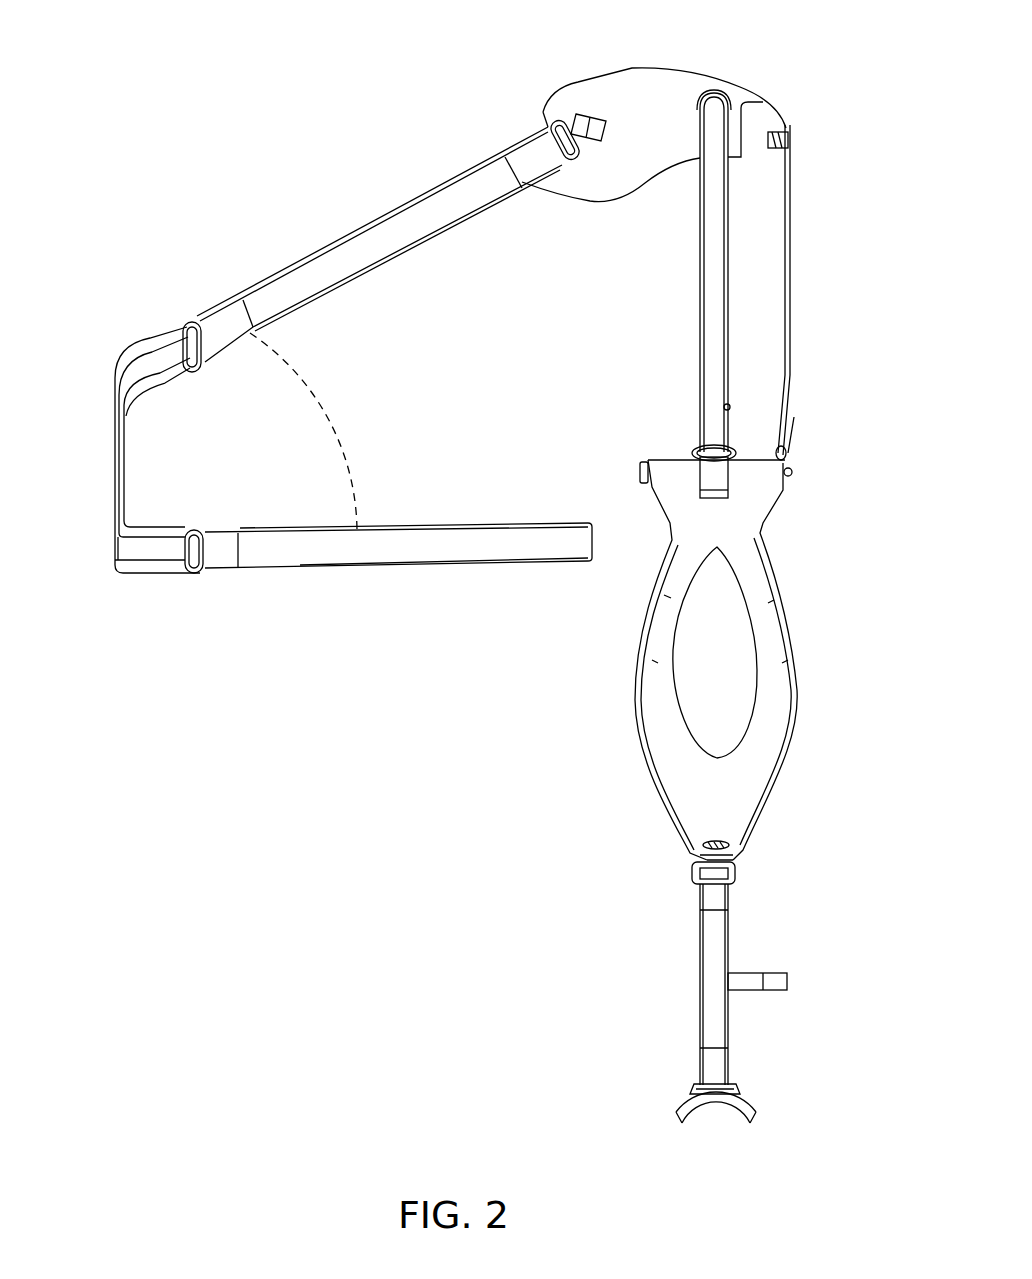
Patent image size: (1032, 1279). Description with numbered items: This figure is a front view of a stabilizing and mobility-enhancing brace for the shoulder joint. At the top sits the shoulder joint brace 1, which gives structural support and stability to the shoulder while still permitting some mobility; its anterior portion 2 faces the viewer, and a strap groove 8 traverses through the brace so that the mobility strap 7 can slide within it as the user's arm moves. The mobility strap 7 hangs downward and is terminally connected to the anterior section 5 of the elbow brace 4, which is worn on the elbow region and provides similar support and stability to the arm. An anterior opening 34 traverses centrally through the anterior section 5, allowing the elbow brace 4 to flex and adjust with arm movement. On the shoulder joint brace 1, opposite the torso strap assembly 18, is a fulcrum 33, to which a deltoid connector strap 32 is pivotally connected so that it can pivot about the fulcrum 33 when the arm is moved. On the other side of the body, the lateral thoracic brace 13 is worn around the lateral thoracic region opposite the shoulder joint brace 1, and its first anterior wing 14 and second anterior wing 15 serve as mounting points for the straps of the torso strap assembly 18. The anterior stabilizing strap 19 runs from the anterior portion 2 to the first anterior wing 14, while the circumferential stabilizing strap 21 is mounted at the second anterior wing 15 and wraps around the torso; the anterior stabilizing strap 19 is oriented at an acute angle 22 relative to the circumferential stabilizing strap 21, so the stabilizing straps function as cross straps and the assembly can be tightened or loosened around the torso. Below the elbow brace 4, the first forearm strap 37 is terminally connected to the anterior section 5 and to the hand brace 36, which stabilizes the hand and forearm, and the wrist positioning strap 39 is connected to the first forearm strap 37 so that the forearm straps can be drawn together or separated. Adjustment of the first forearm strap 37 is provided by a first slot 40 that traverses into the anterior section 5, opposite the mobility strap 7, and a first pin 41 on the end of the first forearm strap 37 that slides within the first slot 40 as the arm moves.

The shoulder joint brace 1 is at (678, 60).
The anterior portion 2 is at (634, 103).
The elbow brace 4 is at (815, 728).
The anterior section 5 is at (770, 592).
The mobility strap 7 is at (712, 271).
The strap groove 8 is at (738, 100).
The lateral thoracic brace 13 is at (95, 456).
The first anterior wing 14 is at (157, 347).
The second anterior wing 15 is at (160, 562).
The torso strap assembly 18 is at (380, 592).
The anterior stabilizing strap 19 is at (368, 246).
The circumferential stabilizing strap 21 is at (465, 550).
The acute angle 22 is at (340, 415).
The deltoid connector strap 32 is at (790, 258).
The fulcrum 33 is at (790, 137).
The anterior opening 34 is at (690, 665).
The hand brace 36 is at (745, 1108).
The first forearm strap 37 is at (712, 945).
The wrist positioning strap 39 is at (788, 982).
The first slot 40 is at (730, 848).
The first pin 41 is at (712, 845).